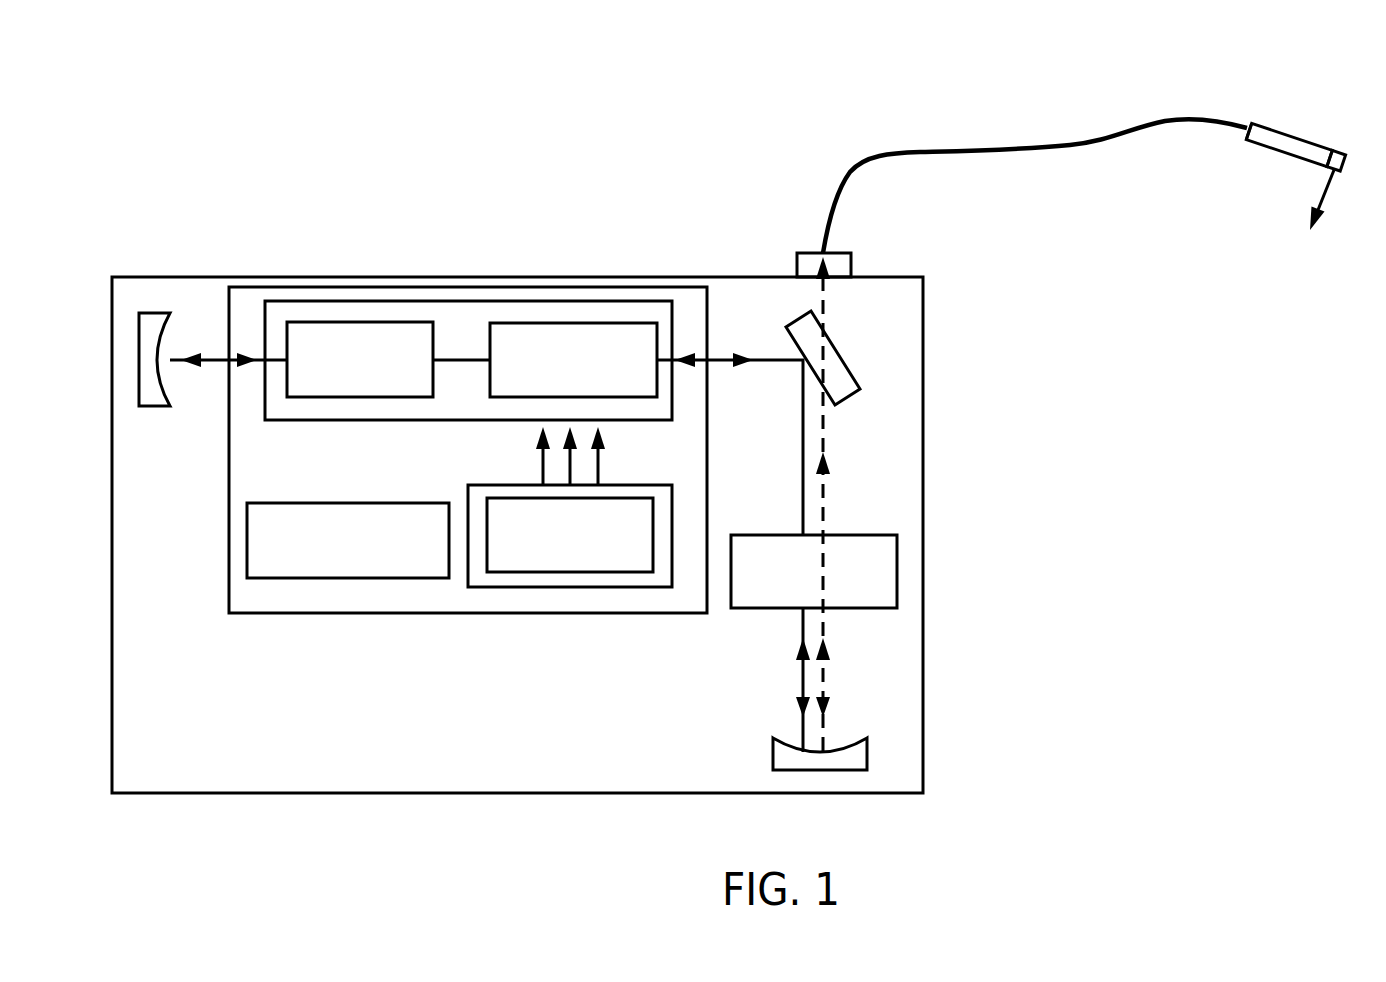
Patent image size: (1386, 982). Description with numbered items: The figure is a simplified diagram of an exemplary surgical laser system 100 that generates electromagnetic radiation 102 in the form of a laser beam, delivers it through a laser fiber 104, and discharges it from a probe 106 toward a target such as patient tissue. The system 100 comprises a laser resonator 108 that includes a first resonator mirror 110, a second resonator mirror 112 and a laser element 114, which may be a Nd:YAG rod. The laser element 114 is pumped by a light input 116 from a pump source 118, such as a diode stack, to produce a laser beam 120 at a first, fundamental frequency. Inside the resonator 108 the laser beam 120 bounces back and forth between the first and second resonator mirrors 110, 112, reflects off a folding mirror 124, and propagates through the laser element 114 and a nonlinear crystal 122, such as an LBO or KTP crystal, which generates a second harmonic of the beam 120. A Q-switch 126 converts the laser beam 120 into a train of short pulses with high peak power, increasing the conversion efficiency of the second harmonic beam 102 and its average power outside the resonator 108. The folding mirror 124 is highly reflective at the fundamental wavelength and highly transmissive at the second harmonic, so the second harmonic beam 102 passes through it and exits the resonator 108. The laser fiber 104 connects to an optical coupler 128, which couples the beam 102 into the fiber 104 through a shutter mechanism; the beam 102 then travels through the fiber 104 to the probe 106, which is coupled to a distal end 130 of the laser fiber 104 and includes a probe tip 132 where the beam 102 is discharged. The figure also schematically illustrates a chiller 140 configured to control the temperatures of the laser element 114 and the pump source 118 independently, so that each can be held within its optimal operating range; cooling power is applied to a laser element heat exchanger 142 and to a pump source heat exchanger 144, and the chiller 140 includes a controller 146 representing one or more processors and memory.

The laser system 100 is at (243, 113).
The electromagnetic radiation 102 is at (818, 272).
The laser fiber 104 is at (912, 152).
The probe 106 is at (1305, 138).
The laser resonator 108 is at (187, 278).
The first resonator mirror 110 is at (153, 400).
The second resonator mirror 112 is at (777, 750).
The laser element 114 is at (597, 323).
The light input 116 is at (505, 448).
The pump source 118 is at (527, 572).
The laser beam 120 is at (717, 362).
The nonlinear crystal 122 is at (890, 548).
The folding mirror 124 is at (847, 383).
The Q-switch 126 is at (367, 322).
The optical coupler 128 is at (850, 253).
The distal end 130 is at (1243, 125).
The probe tip 132 is at (1333, 150).
The chiller 140 is at (247, 613).
The laser element heat exchanger 142 is at (460, 300).
The pump source heat exchanger 144 is at (625, 587).
The controller 146 is at (370, 578).